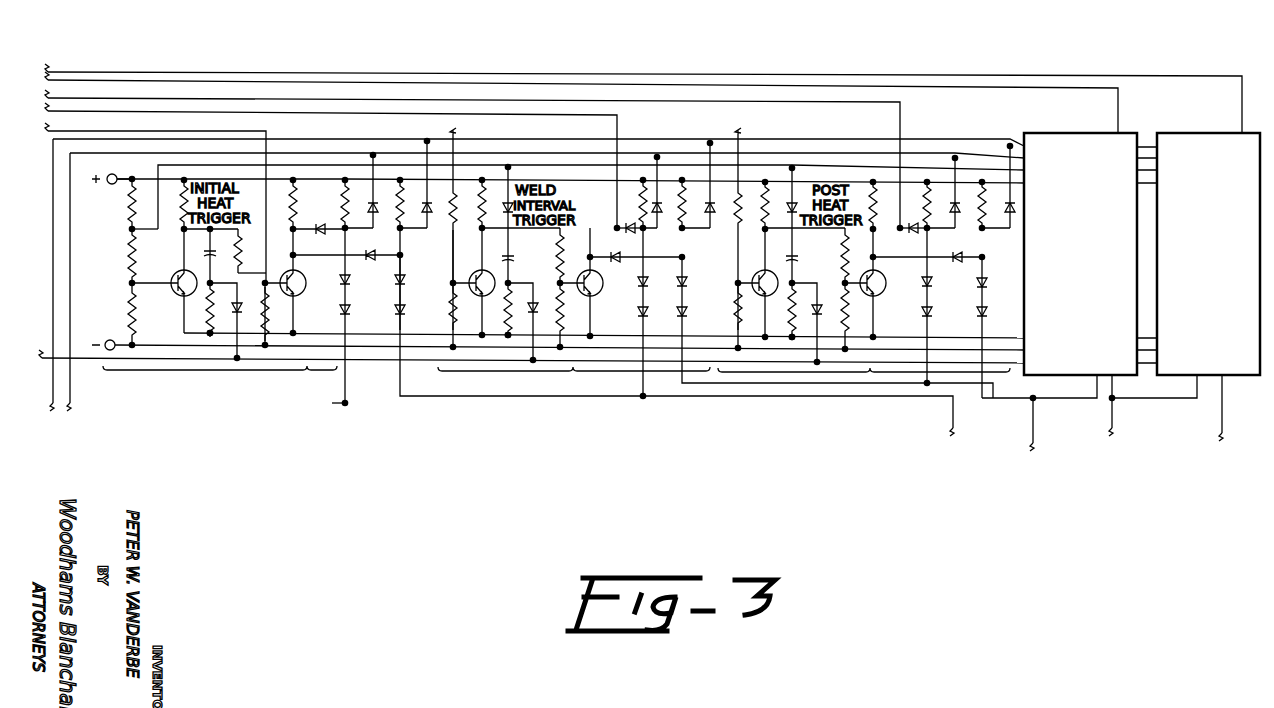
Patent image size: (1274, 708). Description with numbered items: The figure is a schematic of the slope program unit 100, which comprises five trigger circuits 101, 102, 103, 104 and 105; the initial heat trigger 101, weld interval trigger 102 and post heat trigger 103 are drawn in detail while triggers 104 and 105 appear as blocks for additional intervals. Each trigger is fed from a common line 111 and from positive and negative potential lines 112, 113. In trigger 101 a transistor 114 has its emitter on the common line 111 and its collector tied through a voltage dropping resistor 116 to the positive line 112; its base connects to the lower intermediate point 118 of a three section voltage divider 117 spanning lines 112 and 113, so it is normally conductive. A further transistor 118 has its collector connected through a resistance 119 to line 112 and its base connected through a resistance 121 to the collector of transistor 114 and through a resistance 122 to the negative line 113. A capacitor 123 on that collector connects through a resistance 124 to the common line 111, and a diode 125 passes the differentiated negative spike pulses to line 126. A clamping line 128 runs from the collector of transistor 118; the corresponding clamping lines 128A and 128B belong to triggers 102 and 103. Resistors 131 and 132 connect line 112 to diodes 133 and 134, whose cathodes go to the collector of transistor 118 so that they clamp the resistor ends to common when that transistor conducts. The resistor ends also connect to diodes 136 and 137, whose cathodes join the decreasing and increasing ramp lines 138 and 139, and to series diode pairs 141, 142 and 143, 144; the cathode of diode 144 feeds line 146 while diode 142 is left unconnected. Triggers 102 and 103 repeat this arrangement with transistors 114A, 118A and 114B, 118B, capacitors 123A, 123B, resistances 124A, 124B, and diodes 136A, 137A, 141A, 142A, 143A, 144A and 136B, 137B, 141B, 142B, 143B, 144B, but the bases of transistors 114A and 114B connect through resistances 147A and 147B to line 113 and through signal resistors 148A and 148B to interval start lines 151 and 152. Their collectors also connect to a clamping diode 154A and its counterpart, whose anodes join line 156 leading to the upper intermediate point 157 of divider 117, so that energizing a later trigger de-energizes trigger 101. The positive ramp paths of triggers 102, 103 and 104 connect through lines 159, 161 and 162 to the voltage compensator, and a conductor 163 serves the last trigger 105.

The slope program unit 100 is at (384, 70).
The initial heat trigger circuit 101 is at (335, 380).
The weld interval trigger circuit 102 is at (616, 380).
The post heat trigger circuit 103 is at (866, 380).
The trigger circuit 104 is at (1080, 254).
The trigger circuit 105 is at (1208, 254).
The common line 111 is at (192, 335).
The positive D.C. potential line 112 is at (132, 175).
The negative D.C. potential line 113 is at (168, 342).
The transistor 114 is at (171, 270).
The voltage dropping resistor 116 is at (178, 229).
The three section resistive voltage divider 117 is at (137, 309).
The further transistor 118 is at (132, 277).
The resistance 119 is at (300, 192).
The resistance 121 is at (253, 251).
The resistance 122 is at (266, 297).
The capacitor 123 is at (212, 254).
The resistance 124 is at (212, 310).
The diode 125 is at (253, 310).
The line 126 is at (237, 360).
The clamping line 128 is at (125, 132).
The clamping line 128A is at (203, 117).
The clamping line 128B is at (129, 99).
The resistor 131 is at (340, 198).
The resistor 132 is at (398, 234).
The diode 133 is at (333, 228).
The diode 134 is at (388, 257).
The diode 136 is at (348, 214).
The diode 136A is at (660, 225).
The diode 136B is at (962, 226).
The diode 137 is at (437, 217).
The diode 137A is at (720, 225).
The diode 137B is at (1015, 226).
The line 138 is at (343, 153).
The line 139 is at (401, 139).
The diode 141 is at (340, 274).
The diode 141A is at (640, 282).
The diode 141B is at (927, 280).
The diode 142 is at (340, 316).
The diode 142A is at (638, 320).
The diode 142B is at (927, 300).
The diode 143 is at (393, 282).
The diode 143A is at (682, 277).
The diode 143B is at (990, 283).
The diode 144 is at (393, 312).
The diode 144A is at (682, 298).
The diode 144B is at (984, 309).
The line 146 is at (354, 376).
The resistance 147A is at (450, 302).
The resistance 147B is at (736, 315).
The signal resistor 148A is at (451, 248).
The signal resistor 148B is at (757, 258).
The interval start line 151 is at (455, 133).
The interval start line 152 is at (741, 133).
The clamping diode 154A is at (510, 230).
The line 156 is at (537, 167).
The upper intermediate point 157 is at (144, 214).
The line 159 is at (782, 385).
The line 161 is at (1000, 401).
The line 162 is at (1113, 414).
The conductor 163 is at (1223, 414).
The transistor 114A is at (474, 279).
The transistor 114B is at (772, 297).
The further transistor 118A is at (600, 296).
The further transistor 118B is at (873, 237).
The capacitor 123A is at (514, 260).
The capacitor 123B is at (797, 260).
The resistance 124A is at (528, 303).
The resistance 124B is at (809, 297).